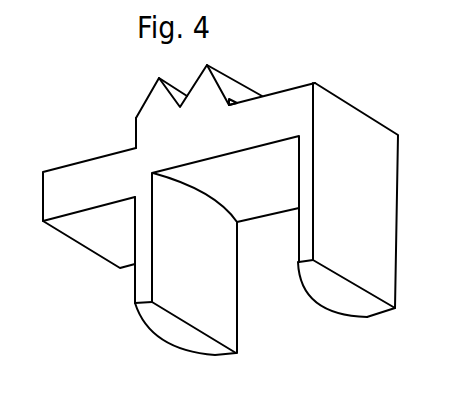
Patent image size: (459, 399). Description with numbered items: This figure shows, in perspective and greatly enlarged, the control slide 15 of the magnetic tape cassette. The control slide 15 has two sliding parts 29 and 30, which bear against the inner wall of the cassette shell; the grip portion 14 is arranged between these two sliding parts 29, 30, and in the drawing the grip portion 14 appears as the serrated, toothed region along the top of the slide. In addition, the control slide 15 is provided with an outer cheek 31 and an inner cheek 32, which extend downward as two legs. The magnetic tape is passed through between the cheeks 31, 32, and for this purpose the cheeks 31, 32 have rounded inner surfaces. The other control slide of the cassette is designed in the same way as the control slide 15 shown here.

The grip portion 14 is at (235, 80).
The control slide 15 is at (86, 268).
The sliding part 29 is at (280, 92).
The sliding part 30 is at (62, 166).
The outer cheek 31 is at (333, 287).
The inner cheek 32 is at (188, 325).